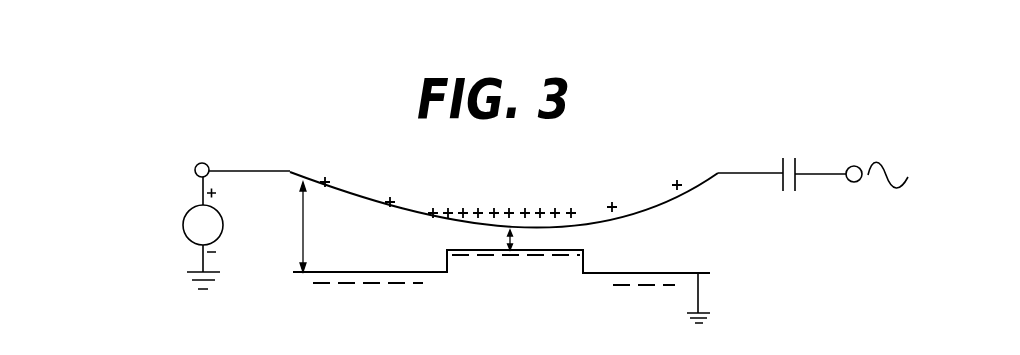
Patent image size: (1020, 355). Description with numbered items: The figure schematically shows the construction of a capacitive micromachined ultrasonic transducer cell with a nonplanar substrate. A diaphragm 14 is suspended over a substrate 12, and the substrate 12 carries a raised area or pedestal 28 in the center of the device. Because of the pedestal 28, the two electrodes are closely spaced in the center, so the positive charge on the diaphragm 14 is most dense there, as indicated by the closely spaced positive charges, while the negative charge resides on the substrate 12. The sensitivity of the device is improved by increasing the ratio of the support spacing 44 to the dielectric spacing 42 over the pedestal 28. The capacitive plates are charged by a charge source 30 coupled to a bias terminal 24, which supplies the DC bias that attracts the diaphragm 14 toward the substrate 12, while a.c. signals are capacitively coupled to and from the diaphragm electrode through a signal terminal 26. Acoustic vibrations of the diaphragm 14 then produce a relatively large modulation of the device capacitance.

The substrate 12 is at (690, 273).
The diaphragm 14 is at (687, 193).
The bias terminal 24 is at (202, 162).
The signal terminal 26 is at (853, 167).
The pedestal 28 is at (587, 262).
The charge source 30 is at (182, 225).
The dielectric spacing 42 is at (517, 237).
The support spacing 44 is at (304, 218).